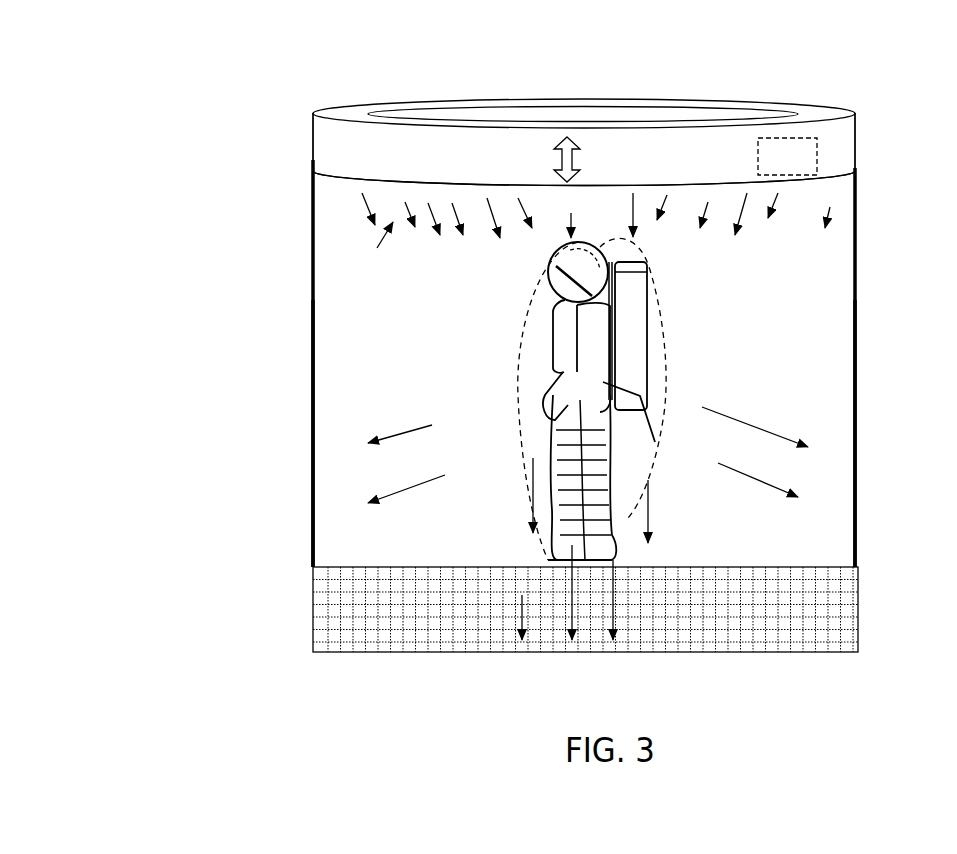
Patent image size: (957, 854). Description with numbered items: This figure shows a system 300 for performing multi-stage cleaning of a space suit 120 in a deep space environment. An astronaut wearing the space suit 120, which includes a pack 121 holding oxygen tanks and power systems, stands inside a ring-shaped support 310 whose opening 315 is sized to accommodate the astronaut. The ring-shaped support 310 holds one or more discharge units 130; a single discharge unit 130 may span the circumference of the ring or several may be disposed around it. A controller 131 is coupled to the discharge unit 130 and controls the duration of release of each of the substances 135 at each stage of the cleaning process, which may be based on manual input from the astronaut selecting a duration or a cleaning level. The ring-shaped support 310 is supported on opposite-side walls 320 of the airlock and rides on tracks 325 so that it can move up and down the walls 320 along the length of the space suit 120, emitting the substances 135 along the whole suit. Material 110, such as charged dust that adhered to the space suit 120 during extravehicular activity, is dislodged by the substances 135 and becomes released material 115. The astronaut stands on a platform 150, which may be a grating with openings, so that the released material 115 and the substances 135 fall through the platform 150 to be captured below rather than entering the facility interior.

The system 300 is at (106, 75).
The discharge unit 130 is at (343, 108).
The opening 315 is at (474, 114).
The ring-shaped support 310 is at (853, 142).
The controller 131 is at (787, 156).
The substance 135 is at (510, 242).
The material 110 is at (513, 394).
The space suit 120 is at (579, 401).
The pack 121 is at (643, 438).
The released material 115 is at (599, 481).
The wall 320 is at (312, 448).
The track 325 is at (313, 531).
The platform 150 is at (327, 630).